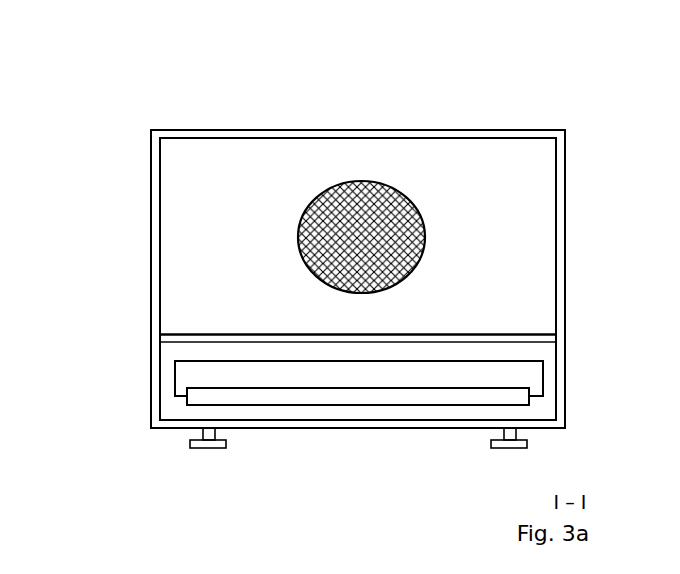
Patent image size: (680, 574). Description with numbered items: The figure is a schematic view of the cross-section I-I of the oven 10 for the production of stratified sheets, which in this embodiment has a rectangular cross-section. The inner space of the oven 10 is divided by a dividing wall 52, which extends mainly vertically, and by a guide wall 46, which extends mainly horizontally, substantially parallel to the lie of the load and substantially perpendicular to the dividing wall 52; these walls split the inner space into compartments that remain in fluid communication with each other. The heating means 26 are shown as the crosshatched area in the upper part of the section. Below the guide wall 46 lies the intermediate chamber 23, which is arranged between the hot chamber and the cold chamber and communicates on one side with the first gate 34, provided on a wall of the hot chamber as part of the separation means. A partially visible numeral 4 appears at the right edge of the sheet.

The oven 10 is at (329, 118).
The heating means 26 is at (424, 185).
The dividing wall 52 is at (215, 223).
The guide wall 46 is at (192, 338).
The intermediate chamber 23 is at (532, 353).
The first gate 34 is at (178, 372).
The element 4 is at (673, 303).